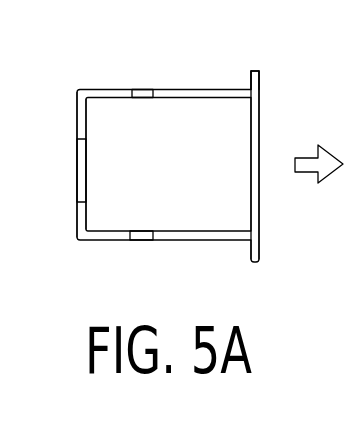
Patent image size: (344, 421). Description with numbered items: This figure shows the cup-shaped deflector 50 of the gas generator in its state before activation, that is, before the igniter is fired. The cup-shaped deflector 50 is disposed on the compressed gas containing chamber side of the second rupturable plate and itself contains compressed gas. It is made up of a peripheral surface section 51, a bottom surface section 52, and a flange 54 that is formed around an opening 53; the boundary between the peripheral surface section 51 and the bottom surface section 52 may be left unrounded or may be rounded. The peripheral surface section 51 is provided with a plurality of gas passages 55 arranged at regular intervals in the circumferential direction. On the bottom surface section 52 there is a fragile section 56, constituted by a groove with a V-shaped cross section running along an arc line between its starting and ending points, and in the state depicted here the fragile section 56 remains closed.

The cup-shaped deflector 50 is at (188, 83).
The peripheral surface section 51 is at (110, 241).
The bottom surface section 52 is at (77, 222).
The opening 53 is at (260, 210).
The flange 54 is at (261, 73).
The gas passages 55 is at (141, 89).
The fragile section 56 is at (77, 139).